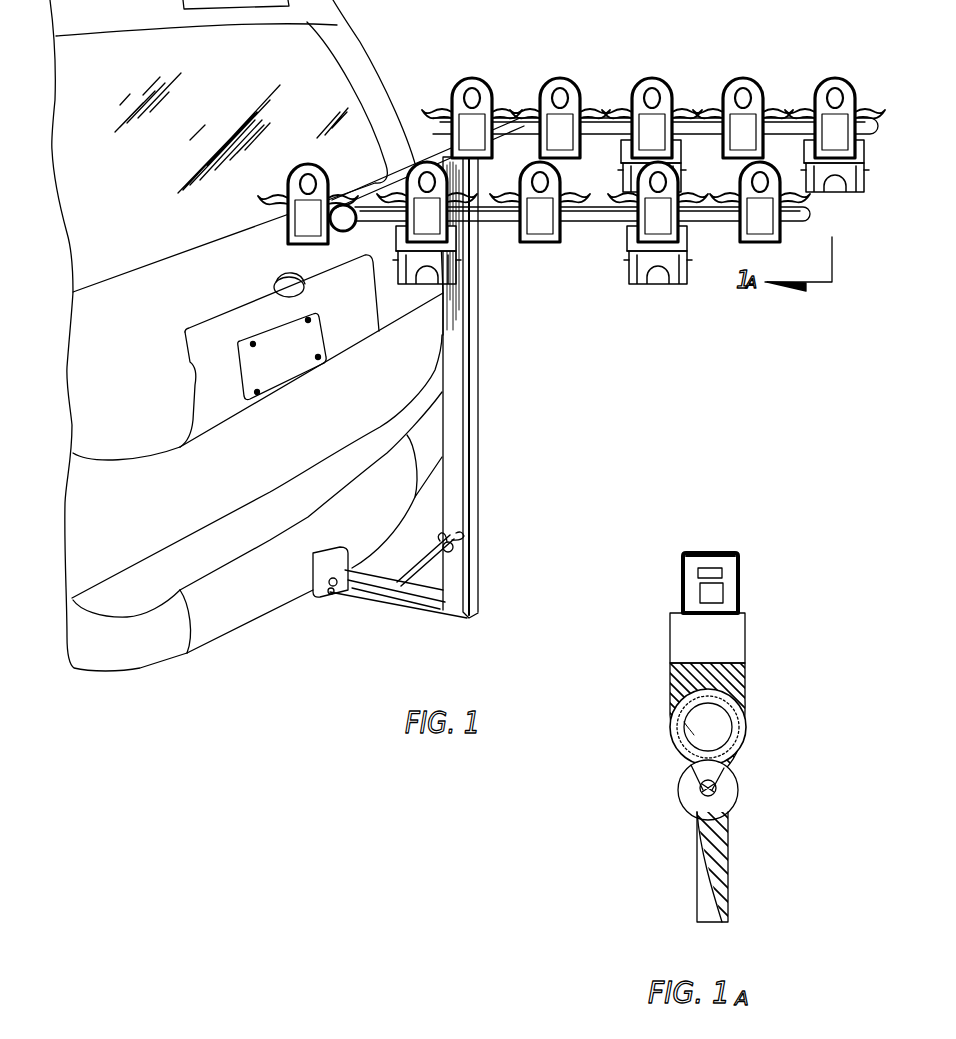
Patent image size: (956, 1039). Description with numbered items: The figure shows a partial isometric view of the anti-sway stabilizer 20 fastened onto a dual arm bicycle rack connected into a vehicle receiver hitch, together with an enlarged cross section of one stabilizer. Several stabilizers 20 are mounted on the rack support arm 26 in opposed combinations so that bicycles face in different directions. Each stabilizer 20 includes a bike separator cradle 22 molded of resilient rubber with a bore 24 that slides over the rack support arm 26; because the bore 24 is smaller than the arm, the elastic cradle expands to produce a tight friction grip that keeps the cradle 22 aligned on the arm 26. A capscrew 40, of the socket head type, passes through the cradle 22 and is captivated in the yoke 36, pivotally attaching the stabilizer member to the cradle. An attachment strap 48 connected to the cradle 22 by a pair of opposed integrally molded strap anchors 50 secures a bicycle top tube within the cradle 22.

In FIG. 1, the anti-sway stabilizer 20 is at (471, 78).
In FIG. 1A, the anti-sway stabilizer 20 is at (716, 717).
In FIG. 1A, the bike separator cradle 22 is at (745, 662).
In FIG. 1A, the bore 24 is at (746, 728).
In FIG. 1, the rack support arm 26 is at (597, 112).
In FIG. 1A, the rack support arm 26 is at (693, 734).
In FIG. 1A, the yoke 36 is at (728, 851).
In FIG. 1A, the capscrew 40 is at (736, 786).
In FIG. 1A, the attachment strap 48 is at (681, 557).
In FIG. 1A, the strap anchors 50 is at (739, 593).